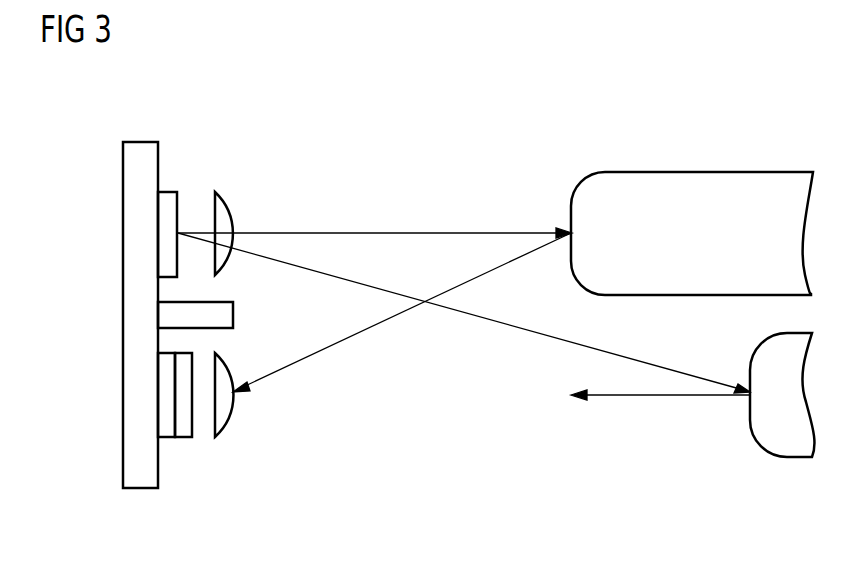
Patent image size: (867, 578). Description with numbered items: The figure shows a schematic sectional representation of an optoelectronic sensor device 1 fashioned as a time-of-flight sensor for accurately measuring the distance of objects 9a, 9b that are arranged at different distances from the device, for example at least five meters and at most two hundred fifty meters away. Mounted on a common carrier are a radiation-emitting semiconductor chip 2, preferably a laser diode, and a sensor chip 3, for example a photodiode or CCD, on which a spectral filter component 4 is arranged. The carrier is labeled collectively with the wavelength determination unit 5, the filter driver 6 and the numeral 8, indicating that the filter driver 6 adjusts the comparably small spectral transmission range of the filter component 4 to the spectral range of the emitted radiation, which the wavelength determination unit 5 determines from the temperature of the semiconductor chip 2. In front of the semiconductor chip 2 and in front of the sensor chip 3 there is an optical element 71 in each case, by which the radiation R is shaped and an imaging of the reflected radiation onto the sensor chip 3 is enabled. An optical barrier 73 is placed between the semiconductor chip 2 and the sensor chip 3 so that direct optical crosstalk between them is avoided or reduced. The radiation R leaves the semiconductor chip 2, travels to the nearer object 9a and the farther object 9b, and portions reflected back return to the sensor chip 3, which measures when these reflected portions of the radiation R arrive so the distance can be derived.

The optoelectronic sensor device 1 is at (102, 285).
The radiation-emitting semiconductor chip 2 is at (164, 190).
The sensor chip 3 is at (171, 439).
The spectral filter component 4 is at (187, 439).
The wavelength determination unit 5 is at (142, 285).
The filter driver 6 is at (142, 285).
The housing 8 is at (143, 141).
The optical element 71 is at (224, 197).
The optical barrier 73 is at (234, 315).
The radiation R is at (397, 232).
The object 9a is at (711, 171).
The object 9b is at (790, 459).